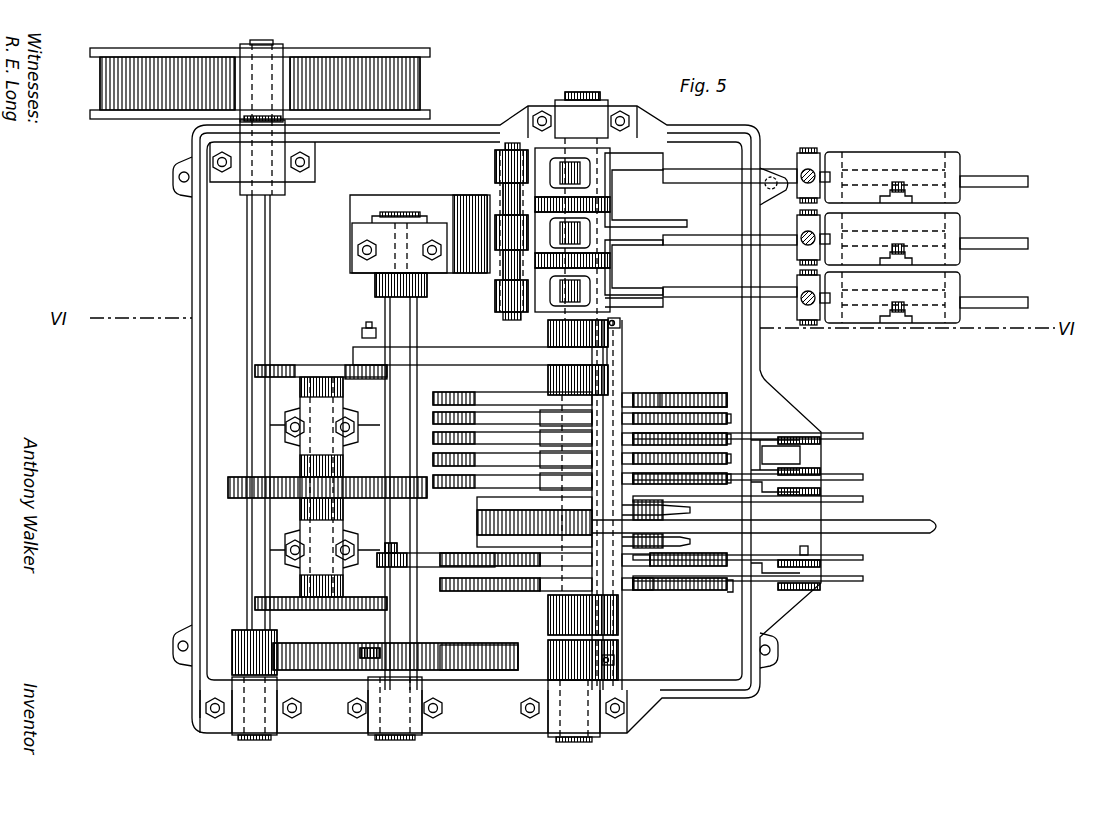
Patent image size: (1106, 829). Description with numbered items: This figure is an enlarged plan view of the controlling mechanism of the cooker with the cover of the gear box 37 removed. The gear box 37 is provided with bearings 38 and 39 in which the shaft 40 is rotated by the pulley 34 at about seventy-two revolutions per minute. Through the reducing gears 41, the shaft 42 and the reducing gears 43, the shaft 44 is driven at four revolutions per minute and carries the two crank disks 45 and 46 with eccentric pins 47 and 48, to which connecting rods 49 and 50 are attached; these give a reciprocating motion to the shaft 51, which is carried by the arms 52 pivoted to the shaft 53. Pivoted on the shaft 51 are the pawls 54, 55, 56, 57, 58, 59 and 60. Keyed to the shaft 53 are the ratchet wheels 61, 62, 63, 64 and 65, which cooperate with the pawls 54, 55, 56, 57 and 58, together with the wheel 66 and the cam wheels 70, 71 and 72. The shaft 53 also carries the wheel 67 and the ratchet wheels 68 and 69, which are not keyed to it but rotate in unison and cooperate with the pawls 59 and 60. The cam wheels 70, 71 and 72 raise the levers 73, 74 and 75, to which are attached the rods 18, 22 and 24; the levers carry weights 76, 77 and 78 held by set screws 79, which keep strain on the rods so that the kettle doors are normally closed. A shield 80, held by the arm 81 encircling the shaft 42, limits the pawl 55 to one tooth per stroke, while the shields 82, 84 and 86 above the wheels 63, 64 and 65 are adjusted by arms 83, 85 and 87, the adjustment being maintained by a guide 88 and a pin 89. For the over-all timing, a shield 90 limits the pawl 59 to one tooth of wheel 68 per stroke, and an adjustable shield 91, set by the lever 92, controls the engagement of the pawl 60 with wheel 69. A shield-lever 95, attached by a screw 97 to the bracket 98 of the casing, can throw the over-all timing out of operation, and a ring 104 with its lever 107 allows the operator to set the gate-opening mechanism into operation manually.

The rod 18 is at (800, 158).
The rod 22 is at (800, 226).
The rod 24 is at (800, 290).
The pulley 34 is at (415, 60).
The gear box 37 is at (207, 382).
The bearing 38 is at (285, 190).
The bearing 39 is at (270, 740).
The shaft 40 is at (270, 275).
The reducing gears 41 is at (318, 643).
The shaft 42 is at (430, 305).
The reducing gears 43 is at (358, 500).
The shaft 44 is at (322, 370).
The crank disk 45 is at (297, 372).
The crank disk 46 is at (300, 612).
The eccentric pin 47 is at (370, 312).
The eccentric pin 48 is at (355, 632).
The connecting rod 49 is at (475, 347).
The connecting rod 50 is at (525, 628).
The shaft 51 is at (625, 662).
The arm 52 is at (622, 350).
The shaft 53 is at (572, 742).
The pawl 54 is at (650, 393).
The pawl 55 is at (674, 420).
The pawl 56 is at (674, 440).
The pawl 57 is at (674, 459).
The pawl 58 is at (674, 479).
The pawl 59 is at (670, 590).
The pawl 60 is at (645, 590).
The ratchet wheel 61 is at (722, 393).
The ratchet wheel 62 is at (733, 410).
The ratchet wheel 63 is at (740, 440).
The ratchet wheel 64 is at (740, 460).
The ratchet wheel 65 is at (740, 482).
The wheel 66 is at (690, 510).
The wheel 67 is at (690, 542).
The ratchet wheel 68 is at (686, 562).
The ratchet wheel 69 is at (729, 598).
The cam wheel 70 is at (640, 182).
The cam wheel 71 is at (650, 248).
The cam wheel 72 is at (663, 304).
The lever 73 is at (715, 183).
The lever 74 is at (715, 245).
The lever 75 is at (718, 287).
The weight 76 is at (955, 152).
The weight 77 is at (960, 222).
The weight 78 is at (960, 283).
The set screw 79 is at (915, 315).
The shield 80 is at (512, 417).
The arm 81 is at (440, 392).
The shield 82 is at (512, 437).
The arm 83 is at (855, 433).
The shield 84 is at (512, 459).
The arm 85 is at (863, 477).
The shield 86 is at (512, 481).
The arm 87 is at (860, 502).
The guide 88 is at (818, 605).
The pin 89 is at (808, 550).
The shield 90 is at (516, 559).
The shield 91 is at (516, 584).
The lever 92 is at (863, 578).
The shield-lever 95 is at (863, 557).
The screw 97 is at (397, 545).
The bracket 98 is at (415, 568).
The ring 104 is at (477, 520).
The lever 107 is at (942, 527).